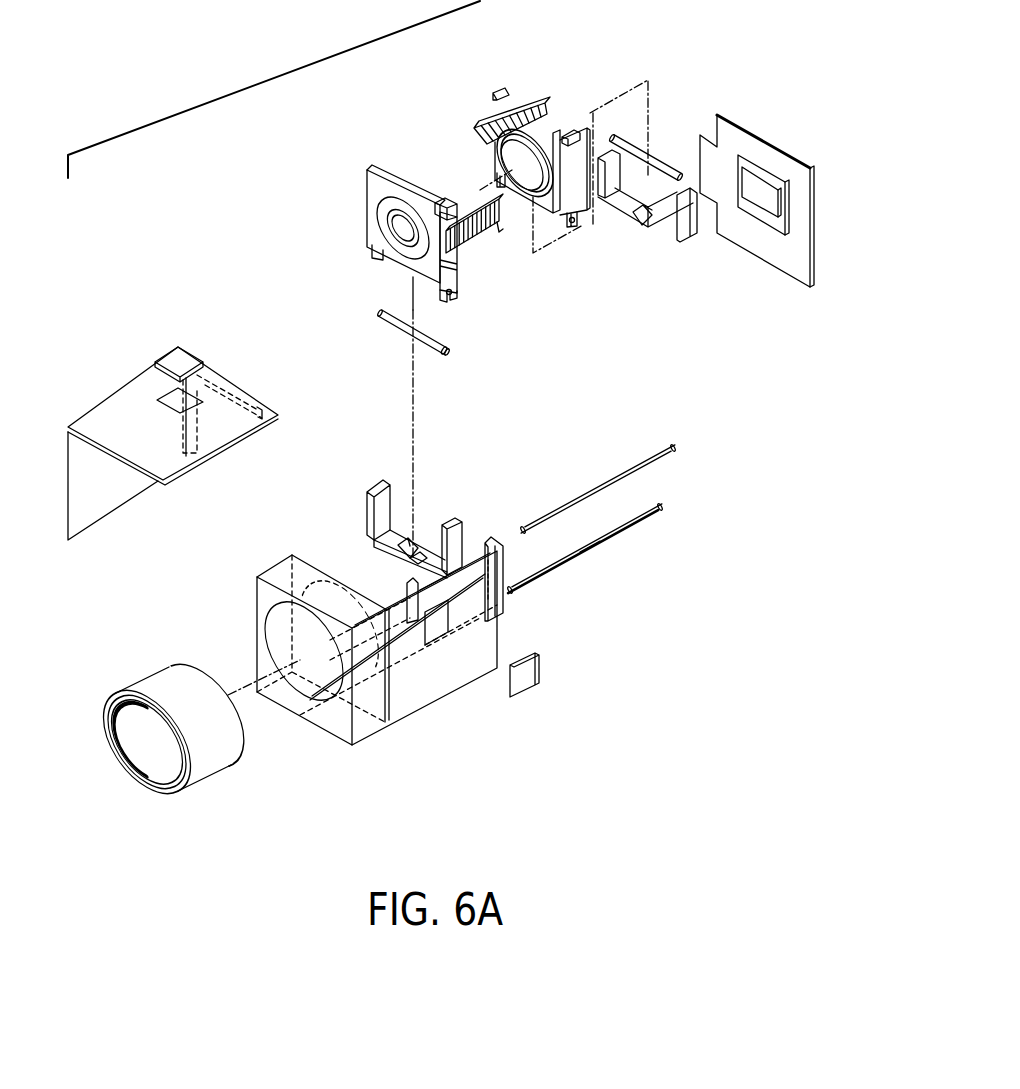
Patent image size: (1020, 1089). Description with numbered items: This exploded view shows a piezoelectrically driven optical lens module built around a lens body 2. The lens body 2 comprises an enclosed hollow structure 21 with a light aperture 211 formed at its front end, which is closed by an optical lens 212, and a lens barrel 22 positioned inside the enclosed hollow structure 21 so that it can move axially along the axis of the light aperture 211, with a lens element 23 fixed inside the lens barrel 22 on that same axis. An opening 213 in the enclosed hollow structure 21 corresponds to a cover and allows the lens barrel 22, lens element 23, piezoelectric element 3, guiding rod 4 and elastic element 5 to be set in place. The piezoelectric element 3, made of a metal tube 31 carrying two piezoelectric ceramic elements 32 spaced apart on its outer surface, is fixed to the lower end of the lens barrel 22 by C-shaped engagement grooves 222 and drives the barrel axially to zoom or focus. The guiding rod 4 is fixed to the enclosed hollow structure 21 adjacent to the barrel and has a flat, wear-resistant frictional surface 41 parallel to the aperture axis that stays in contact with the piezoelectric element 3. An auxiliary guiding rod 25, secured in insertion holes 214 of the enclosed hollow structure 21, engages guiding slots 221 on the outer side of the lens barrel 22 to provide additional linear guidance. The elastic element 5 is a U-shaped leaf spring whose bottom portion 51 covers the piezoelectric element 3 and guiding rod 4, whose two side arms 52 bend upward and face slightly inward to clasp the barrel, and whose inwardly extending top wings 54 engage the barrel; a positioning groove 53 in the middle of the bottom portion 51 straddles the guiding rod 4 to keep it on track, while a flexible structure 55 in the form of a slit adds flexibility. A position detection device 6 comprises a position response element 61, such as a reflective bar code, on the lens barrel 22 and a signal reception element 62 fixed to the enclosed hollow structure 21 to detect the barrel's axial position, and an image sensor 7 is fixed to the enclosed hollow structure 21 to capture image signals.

The lens body 2 is at (280, 90).
The enclosed hollow structure 21 is at (388, 479).
The light aperture 211 is at (300, 683).
The optical lens 212 is at (205, 762).
The opening 213 is at (410, 572).
The insertion holes 214 is at (490, 550).
The lens barrel 22 is at (385, 188).
The guiding slots 221 is at (460, 197).
The engagement grooves 222 is at (452, 293).
The lens element 23 is at (380, 220).
The auxiliary guiding rod 25 is at (650, 465).
The piezoelectric element 3 is at (517, 300).
The metal tube 31 is at (450, 352).
The piezoelectric ceramic elements 32 is at (428, 335).
The guiding rod 4 is at (640, 522).
The frictional surface 41 is at (588, 543).
The elastic element 5 is at (522, 357).
The bottom portion 51 is at (390, 530).
The side arms 52 is at (433, 533).
The positioning groove 53 is at (415, 543).
The top wings 54 is at (453, 520).
The flexible structure 55 is at (418, 547).
The position detection device 6 is at (662, 363).
The position response element 61 is at (500, 232).
The signal reception element 62 is at (523, 673).
The image sensor 7 is at (772, 140).